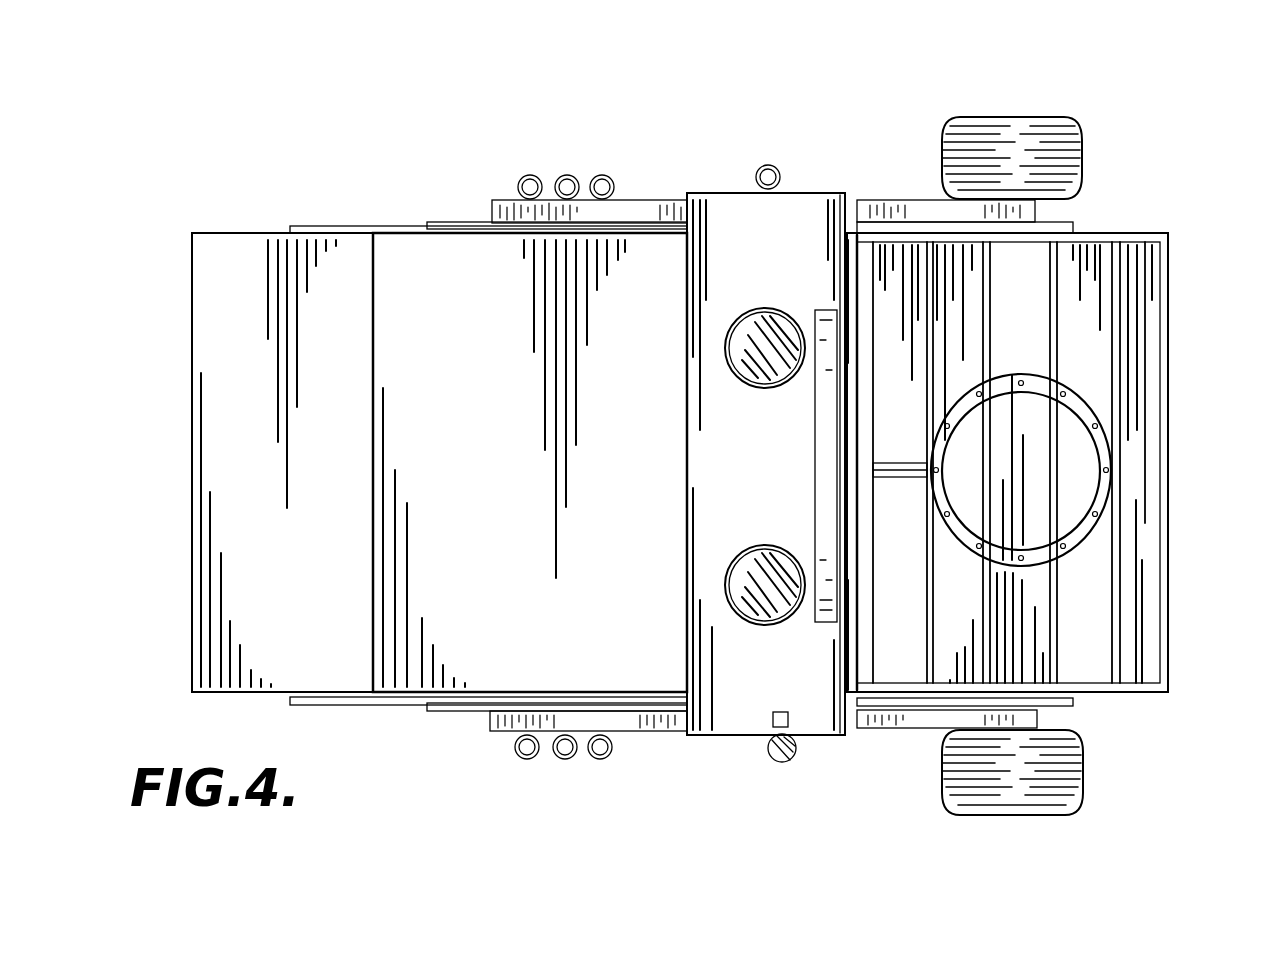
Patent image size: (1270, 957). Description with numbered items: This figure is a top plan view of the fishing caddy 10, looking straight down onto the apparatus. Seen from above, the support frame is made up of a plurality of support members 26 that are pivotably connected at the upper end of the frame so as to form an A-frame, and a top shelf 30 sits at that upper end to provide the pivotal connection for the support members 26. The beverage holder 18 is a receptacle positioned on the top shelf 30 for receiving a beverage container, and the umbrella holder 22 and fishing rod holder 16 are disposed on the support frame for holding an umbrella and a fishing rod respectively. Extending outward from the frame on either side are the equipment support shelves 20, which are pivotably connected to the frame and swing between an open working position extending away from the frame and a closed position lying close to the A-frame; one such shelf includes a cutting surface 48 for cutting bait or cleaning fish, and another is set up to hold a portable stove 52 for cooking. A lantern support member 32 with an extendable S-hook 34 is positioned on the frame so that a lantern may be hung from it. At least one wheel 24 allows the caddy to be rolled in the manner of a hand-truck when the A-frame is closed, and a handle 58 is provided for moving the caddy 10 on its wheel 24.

The fishing caddy 10 is at (288, 104).
The fishing rod holder 16 is at (540, 176).
The beverage holder 18 is at (770, 308).
The equipment support shelf 20 is at (288, 621).
The umbrella holder 22 is at (768, 165).
The wheel 24 is at (1058, 123).
The support members 26 is at (653, 207).
The top shelf 30 is at (772, 474).
The lantern support member 32 is at (782, 762).
The extendable S-hook 34 is at (790, 735).
The cutting surface 48 is at (494, 582).
The portable stove 52 is at (1095, 337).
The handle 58 is at (833, 405).